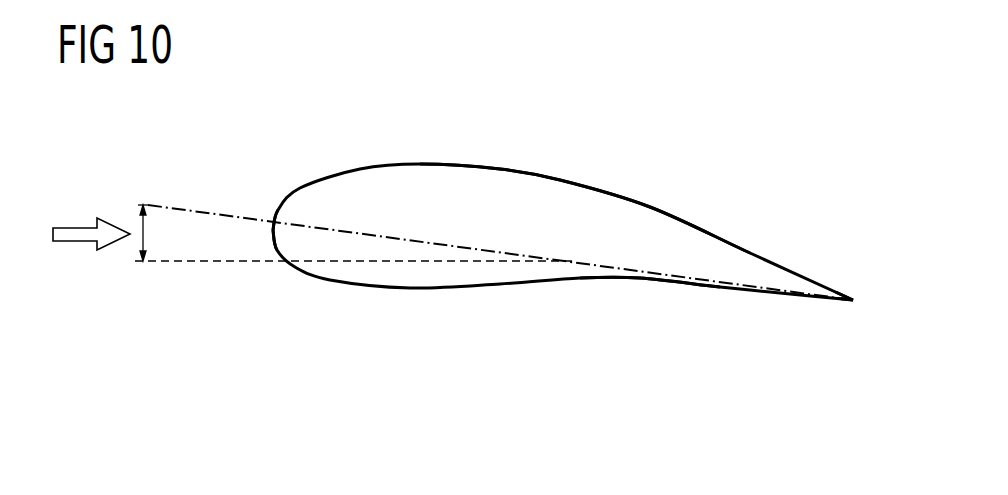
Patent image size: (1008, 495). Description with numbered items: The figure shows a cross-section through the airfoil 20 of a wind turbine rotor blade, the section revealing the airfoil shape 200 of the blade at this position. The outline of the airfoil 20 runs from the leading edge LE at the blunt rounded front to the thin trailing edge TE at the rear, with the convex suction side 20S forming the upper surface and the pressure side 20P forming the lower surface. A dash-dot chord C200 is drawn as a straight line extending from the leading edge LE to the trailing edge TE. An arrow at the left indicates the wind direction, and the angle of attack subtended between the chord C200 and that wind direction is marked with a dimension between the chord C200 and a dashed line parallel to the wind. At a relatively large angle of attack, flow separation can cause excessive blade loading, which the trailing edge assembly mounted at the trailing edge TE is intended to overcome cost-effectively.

The airfoil portion 20 is at (338, 136).
The airfoil shape 200 is at (525, 170).
The suction side 20S is at (652, 207).
The pressure side 20P is at (675, 283).
The chord C200 is at (763, 287).
The leading edge LE is at (276, 222).
The trailing edge TE is at (855, 303).